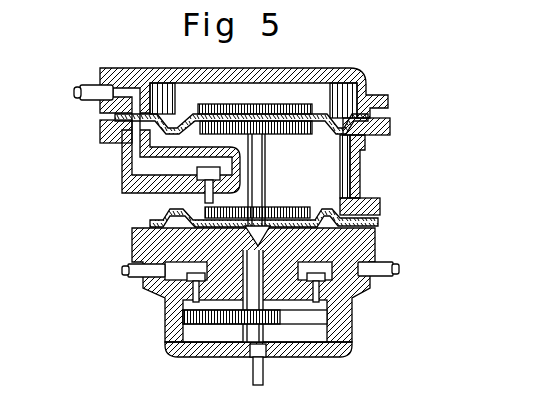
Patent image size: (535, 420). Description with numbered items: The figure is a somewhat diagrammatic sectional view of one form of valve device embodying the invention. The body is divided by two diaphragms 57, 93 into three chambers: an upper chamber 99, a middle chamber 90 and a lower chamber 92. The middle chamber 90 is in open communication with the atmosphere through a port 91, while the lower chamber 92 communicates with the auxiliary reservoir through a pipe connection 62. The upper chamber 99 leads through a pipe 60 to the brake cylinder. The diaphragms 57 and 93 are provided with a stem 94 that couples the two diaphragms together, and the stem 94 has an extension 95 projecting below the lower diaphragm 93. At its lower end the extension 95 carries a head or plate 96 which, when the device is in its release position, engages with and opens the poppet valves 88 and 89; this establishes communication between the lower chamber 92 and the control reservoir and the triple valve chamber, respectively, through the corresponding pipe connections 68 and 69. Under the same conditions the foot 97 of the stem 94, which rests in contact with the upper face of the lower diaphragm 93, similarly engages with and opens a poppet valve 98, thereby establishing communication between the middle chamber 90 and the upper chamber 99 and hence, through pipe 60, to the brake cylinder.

The diaphragm 57 is at (374, 141).
The pipe 60 is at (86, 91).
The pipe connection 62 is at (250, 372).
The pipe connection 68 is at (128, 273).
The pipe connection 69 is at (380, 266).
The poppet valve 88 is at (164, 292).
The poppet valve 89 is at (330, 284).
The middle chamber 90 is at (362, 170).
The port 91 is at (127, 192).
The lower chamber 92 is at (328, 334).
The diaphragm 93 is at (360, 201).
The stem 94 is at (267, 158).
The extension 95 is at (283, 300).
The head or plate 96 is at (297, 320).
The foot 97 is at (291, 212).
The poppet valve 98 is at (201, 168).
The upper chamber 99 is at (290, 90).